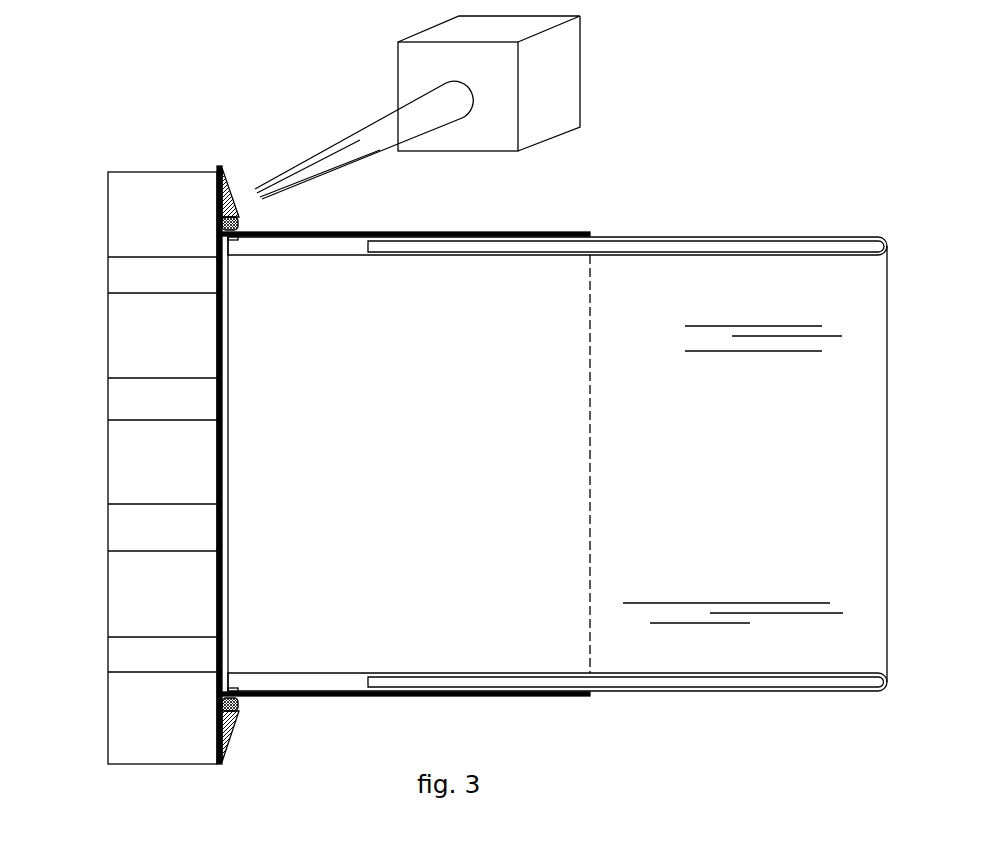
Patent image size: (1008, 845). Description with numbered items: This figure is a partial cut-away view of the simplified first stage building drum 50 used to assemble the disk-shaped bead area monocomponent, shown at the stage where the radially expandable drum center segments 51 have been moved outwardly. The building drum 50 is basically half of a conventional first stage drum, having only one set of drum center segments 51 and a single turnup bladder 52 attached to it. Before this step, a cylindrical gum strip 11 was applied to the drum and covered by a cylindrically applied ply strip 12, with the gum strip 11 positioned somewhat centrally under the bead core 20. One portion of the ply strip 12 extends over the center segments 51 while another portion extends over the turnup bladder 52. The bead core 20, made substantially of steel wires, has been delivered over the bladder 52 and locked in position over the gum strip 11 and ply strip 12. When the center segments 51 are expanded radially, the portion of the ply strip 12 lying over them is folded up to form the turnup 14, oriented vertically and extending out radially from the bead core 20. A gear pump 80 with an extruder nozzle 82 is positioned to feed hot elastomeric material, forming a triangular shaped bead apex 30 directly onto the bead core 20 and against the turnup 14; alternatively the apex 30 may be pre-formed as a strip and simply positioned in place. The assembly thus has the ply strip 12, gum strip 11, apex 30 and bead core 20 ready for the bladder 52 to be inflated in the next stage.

The gum strip 11 is at (228, 239).
The ply strip 12 is at (528, 230).
The ply turnup 14 is at (217, 163).
The bead core 20 is at (238, 225).
The bead apex 30 is at (228, 208).
The first stage building drum 50 is at (698, 225).
The drum center segments 51 is at (128, 451).
The turnup bladder 52 is at (668, 317).
The gear pump 80 is at (538, 100).
The extruder nozzle 82 is at (373, 138).